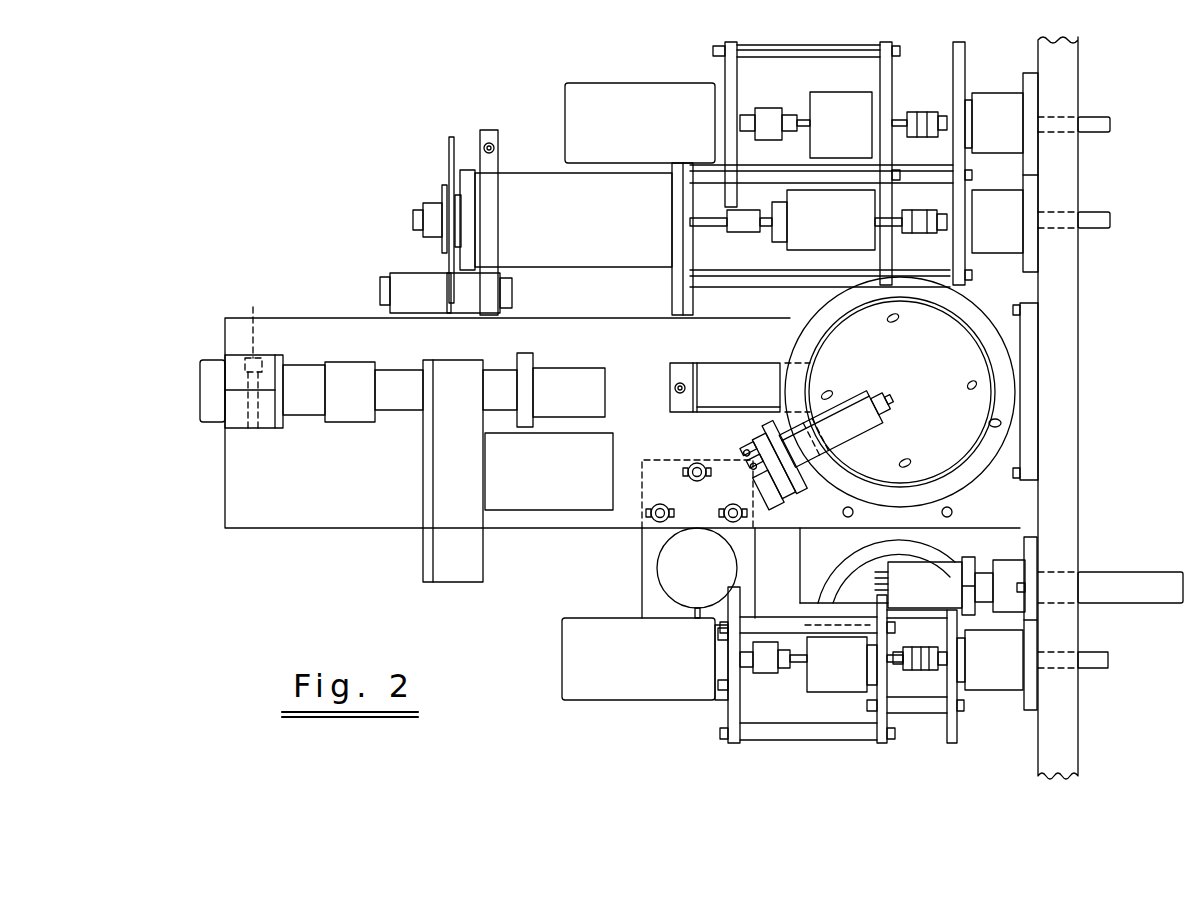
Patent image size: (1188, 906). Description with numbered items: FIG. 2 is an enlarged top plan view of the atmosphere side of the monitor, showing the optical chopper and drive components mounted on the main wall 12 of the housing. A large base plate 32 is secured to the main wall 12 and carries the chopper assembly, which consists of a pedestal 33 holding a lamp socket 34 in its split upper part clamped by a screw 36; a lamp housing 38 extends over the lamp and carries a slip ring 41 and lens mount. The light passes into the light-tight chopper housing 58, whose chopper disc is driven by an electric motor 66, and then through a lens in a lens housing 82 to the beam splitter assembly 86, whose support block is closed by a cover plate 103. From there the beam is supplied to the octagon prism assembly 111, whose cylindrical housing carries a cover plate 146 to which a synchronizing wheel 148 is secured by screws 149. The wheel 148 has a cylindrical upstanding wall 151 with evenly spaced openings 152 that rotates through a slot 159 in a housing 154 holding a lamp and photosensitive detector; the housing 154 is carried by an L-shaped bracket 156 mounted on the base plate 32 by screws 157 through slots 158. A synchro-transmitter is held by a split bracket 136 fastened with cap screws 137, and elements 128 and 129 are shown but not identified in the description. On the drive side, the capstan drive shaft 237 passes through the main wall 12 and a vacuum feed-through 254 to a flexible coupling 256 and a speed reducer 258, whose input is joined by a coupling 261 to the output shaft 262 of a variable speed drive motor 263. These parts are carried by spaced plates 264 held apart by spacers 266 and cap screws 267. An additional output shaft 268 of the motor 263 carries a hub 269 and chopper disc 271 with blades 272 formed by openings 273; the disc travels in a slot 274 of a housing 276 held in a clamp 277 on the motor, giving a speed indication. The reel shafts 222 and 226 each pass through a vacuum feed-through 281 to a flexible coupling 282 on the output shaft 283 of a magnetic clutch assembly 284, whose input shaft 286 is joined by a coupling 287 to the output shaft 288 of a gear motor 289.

The main wall 12 is at (1047, 743).
The base plate 32 is at (342, 478).
The pedestal 33 is at (243, 420).
The lamp socket 34 is at (205, 403).
The screw 36 is at (254, 358).
The lamp housing 38 is at (304, 428).
The slip ring 41 is at (356, 402).
The chopper housing 58 is at (466, 476).
The electric motor 66 is at (557, 476).
The lens housing 82 is at (577, 402).
The beam splitter assembly 86 is at (695, 356).
The cover plate 103 is at (759, 400).
The octagon prism assembly 111 is at (990, 490).
The mounting bolts 128 is at (690, 482).
The wheel 129 is at (642, 517).
The split bracket 136 is at (805, 565).
The cap screws 137 is at (843, 512).
The cover plate 146 is at (953, 483).
The synchronizing wheel 148 is at (1000, 380).
The screws 149 is at (967, 385).
The cylindrical upstanding wall 151 is at (995, 362).
The openings 152 is at (955, 463).
The housing 154 is at (865, 430).
The L-shaped bracket 156 is at (807, 485).
The screws 157 is at (744, 437).
The slots 158 is at (748, 452).
The slot 159 is at (838, 462).
The shaft 222 is at (1098, 672).
The shaft 226 is at (1095, 120).
The capstan drive shaft 237 is at (1089, 215).
The vacuum feed-through 254 is at (1007, 232).
The flexible coupling 256 is at (925, 233).
The speed reducer 258 is at (842, 232).
The coupling 261 is at (741, 232).
The output shaft 262 is at (712, 228).
The variable speed drive motor 263 is at (596, 224).
The plates 264 is at (880, 46).
The spacers 266 is at (793, 47).
The cap screws 267 is at (895, 48).
The additional output shaft 268 is at (413, 218).
The hub 269 is at (425, 234).
The chopper disc 271 is at (452, 132).
The blades 272 is at (449, 150).
The openings 273 is at (444, 175).
The slot 274 is at (448, 270).
The housing 276 is at (428, 305).
The clamp 277 is at (498, 190).
The vacuum feed-through 281 is at (1012, 135).
The flexible coupling 282 is at (921, 650).
The output shaft 283 is at (899, 668).
The magnetic clutch assembly 284 is at (851, 674).
The input shaft 286 is at (801, 668).
The coupling 287 is at (743, 663).
The output shaft 288 is at (771, 671).
The gear motor 289 is at (653, 670).